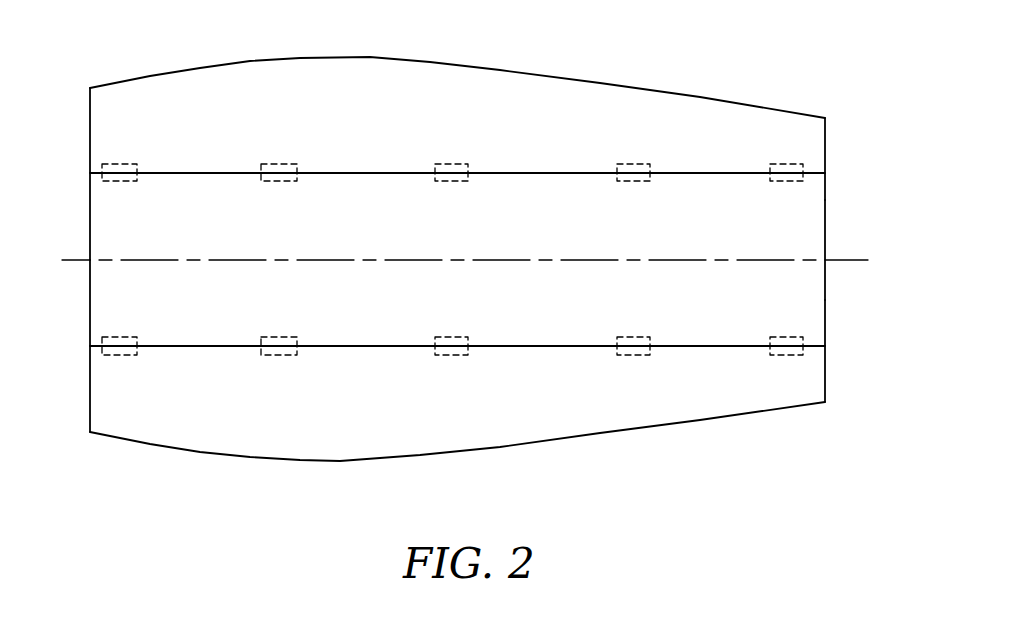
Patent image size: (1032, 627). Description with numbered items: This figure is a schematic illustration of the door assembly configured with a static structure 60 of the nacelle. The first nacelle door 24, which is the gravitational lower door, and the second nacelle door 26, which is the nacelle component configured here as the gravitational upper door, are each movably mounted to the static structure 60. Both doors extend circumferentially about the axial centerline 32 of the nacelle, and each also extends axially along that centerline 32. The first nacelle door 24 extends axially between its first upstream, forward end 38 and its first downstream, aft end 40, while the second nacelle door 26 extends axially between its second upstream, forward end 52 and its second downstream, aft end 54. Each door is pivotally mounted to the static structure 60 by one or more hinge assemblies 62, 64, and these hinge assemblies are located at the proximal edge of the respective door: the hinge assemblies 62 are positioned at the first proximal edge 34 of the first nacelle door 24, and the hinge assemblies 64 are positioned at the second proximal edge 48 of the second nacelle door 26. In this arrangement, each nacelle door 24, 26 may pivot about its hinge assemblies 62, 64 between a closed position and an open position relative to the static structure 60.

The first nacelle door 24 is at (682, 423).
The nacelle component 26 is at (723, 100).
The axial centerline 32 is at (860, 263).
The first proximal edge 34 is at (815, 345).
The first upstream, forward end 38 is at (91, 396).
The first downstream, aft end 40 is at (826, 385).
The second proximal edge 48 is at (820, 174).
The second upstream, forward end 52 is at (90, 128).
The second downstream, aft end 54 is at (826, 138).
The static structure 60 is at (818, 217).
The hinge assembly 62 is at (113, 357).
The hinge assembly 64 is at (118, 164).